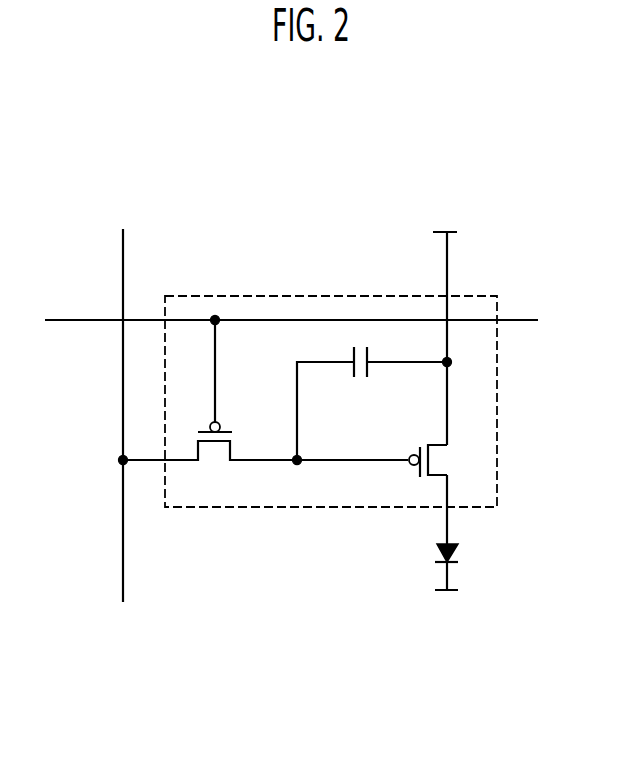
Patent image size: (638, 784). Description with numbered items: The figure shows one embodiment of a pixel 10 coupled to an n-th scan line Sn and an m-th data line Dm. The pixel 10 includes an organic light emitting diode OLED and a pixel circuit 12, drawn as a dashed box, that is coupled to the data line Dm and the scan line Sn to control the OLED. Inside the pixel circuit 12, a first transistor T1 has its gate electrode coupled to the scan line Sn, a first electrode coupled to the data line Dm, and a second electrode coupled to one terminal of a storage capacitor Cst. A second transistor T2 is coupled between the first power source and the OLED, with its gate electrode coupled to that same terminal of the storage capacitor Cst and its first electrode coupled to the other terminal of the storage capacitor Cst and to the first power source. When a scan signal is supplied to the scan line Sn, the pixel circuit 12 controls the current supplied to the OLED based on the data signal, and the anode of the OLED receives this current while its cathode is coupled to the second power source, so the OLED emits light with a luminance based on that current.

The pixel 10 is at (295, 229).
The pixel circuit 12 is at (497, 372).
The data line Dm is at (123, 238).
The scan line Sn is at (60, 322).
The first transistor T1 is at (210, 404).
The second transistor T2 is at (382, 461).
The storage capacitor Cst is at (372, 403).
The organic light emitting diode OLED is at (419, 532).